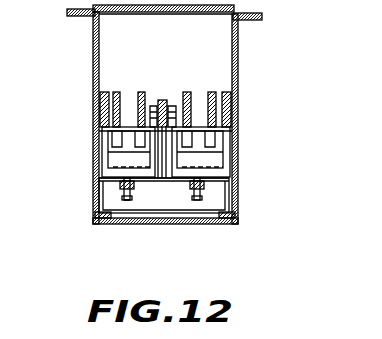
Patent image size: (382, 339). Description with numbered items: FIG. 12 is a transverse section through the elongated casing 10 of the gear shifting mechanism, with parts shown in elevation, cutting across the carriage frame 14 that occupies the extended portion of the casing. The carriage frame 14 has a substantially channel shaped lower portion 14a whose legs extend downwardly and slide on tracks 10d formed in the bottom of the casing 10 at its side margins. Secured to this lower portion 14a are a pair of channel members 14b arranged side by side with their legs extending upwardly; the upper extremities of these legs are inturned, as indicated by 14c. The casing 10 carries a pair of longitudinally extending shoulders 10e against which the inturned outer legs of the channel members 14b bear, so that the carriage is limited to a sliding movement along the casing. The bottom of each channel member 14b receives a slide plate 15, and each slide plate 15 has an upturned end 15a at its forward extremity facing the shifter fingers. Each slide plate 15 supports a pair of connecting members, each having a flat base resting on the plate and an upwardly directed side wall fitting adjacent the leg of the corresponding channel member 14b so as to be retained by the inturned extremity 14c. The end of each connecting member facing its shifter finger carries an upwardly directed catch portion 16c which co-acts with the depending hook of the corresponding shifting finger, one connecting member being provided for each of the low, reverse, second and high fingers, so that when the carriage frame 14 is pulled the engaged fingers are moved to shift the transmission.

The casing 10 is at (118, 33).
The longitudinally extending shoulders 10e is at (92, 111).
The tracks 10d is at (100, 226).
The carriage frame 14 is at (234, 197).
The channel shaped lower portion 14a is at (90, 202).
The channel members 14b is at (107, 150).
The inturned extremities 14c is at (107, 130).
The slide plate 15 is at (113, 167).
The upturned end 15a is at (97, 190).
The catch portion 16c is at (205, 158).